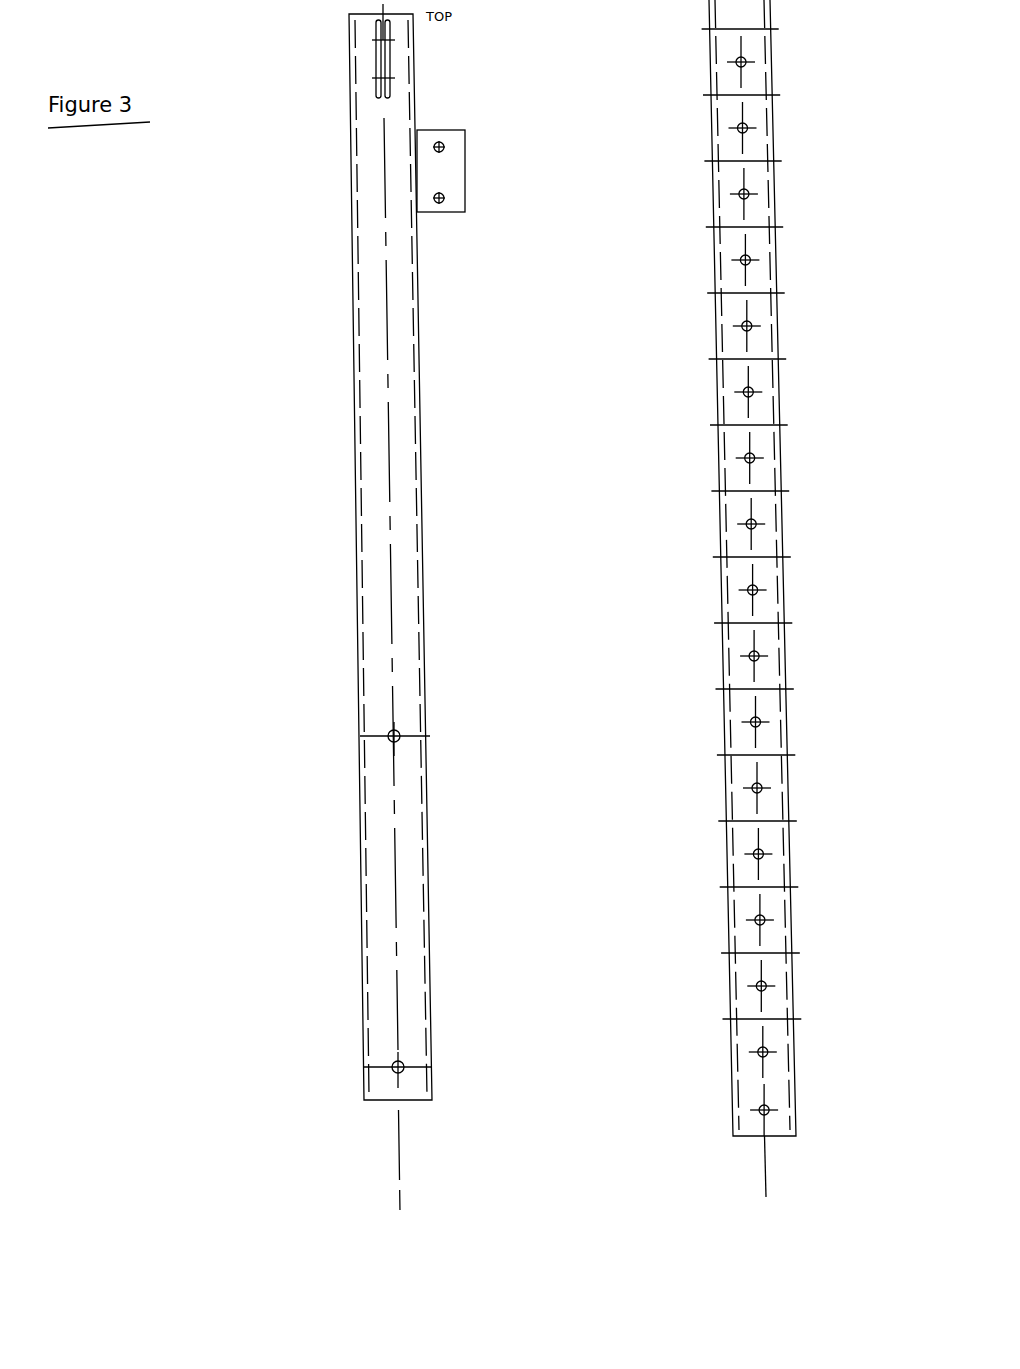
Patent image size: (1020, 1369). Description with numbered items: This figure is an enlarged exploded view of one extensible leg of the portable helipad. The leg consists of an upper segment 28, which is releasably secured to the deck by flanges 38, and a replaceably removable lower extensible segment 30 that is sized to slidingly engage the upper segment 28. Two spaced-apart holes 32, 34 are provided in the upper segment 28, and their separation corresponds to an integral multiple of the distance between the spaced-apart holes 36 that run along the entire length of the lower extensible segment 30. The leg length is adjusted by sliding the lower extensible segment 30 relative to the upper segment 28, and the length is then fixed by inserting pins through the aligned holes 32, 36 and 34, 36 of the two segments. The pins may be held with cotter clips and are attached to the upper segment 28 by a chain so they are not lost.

The upper segment 28 is at (312, 373).
The lower extensible segment 30 is at (799, 598).
The hole 32 is at (403, 735).
The hole 34 is at (405, 1065).
The holes 36 is at (752, 854).
The flanges 38 is at (387, 62).